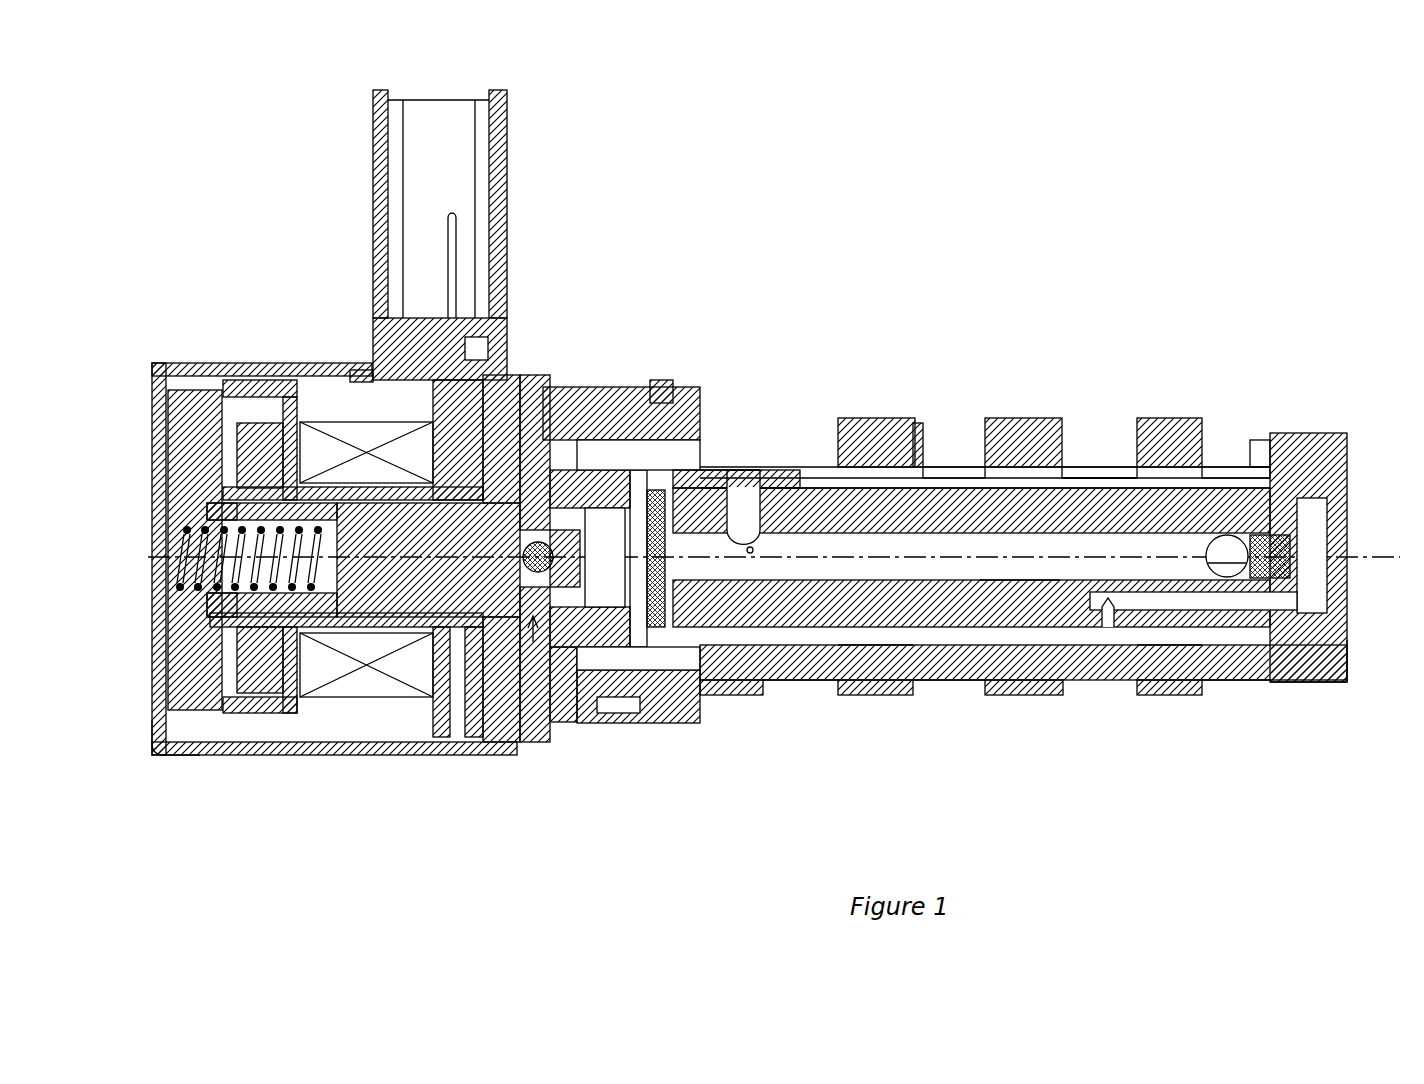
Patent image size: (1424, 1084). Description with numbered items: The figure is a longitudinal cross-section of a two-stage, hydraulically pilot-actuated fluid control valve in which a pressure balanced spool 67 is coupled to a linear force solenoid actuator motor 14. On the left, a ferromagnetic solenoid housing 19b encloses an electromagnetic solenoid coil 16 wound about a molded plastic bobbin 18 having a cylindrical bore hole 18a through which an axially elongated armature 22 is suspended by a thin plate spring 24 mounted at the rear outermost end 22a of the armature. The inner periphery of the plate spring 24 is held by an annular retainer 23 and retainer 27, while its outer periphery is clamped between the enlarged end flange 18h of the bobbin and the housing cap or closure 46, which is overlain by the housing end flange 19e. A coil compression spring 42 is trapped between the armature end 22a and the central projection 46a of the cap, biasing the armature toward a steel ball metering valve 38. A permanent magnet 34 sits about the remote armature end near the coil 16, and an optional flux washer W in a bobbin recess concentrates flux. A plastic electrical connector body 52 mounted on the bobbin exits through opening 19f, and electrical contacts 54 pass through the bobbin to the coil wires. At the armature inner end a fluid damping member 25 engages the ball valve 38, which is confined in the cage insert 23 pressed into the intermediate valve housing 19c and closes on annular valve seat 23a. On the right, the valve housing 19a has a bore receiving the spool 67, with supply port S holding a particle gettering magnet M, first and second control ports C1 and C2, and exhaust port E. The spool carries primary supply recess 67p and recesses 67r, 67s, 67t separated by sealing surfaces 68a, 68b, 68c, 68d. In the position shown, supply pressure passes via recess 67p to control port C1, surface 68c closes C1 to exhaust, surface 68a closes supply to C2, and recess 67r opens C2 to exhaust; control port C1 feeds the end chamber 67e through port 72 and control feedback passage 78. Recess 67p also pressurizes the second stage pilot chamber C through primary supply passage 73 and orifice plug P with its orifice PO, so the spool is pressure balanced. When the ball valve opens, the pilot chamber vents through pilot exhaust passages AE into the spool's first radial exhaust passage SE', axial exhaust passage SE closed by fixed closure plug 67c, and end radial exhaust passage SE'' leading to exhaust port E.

The electrical connector body 52 is at (498, 147).
The electrical contacts 54 is at (456, 243).
The opening 19f is at (368, 376).
The linear force solenoid actuator motor 14 is at (213, 348).
The annular end flange 19e is at (150, 392).
The solenoid housing 19b is at (187, 752).
The plate spring 24 is at (172, 738).
The annular end flange of the coil bobbin 18h is at (232, 392).
The housing cap or closure 46 is at (187, 388).
The central axially extending projection 46a is at (207, 527).
The annular retainer / ball valve cage insert 23 is at (215, 485).
The electromagnetic solenoid coil 16 is at (338, 692).
The permanent magnet 34 is at (258, 700).
The rear outermost end of the armature 22a is at (223, 630).
The flux washer W is at (458, 702).
The bobbin 18 is at (493, 750).
The armature 22 is at (373, 540).
The bore hole 18a is at (397, 614).
The coil compression spring 42 is at (245, 572).
The retainer / damping and exhaust chamber 27 is at (222, 600).
The fluid damping member 25 is at (540, 540).
The second stage pilot chamber C is at (605, 557).
The ball metering valve (pilot valve) 38 is at (556, 392).
The annular valve seat 23a is at (660, 445).
The intermediate valve housing 19c is at (603, 724).
The pilot exhaust passages AE is at (600, 470).
The spool 67 is at (818, 628).
The spool sealing surface 68a is at (832, 425).
The spool sealing surface 68b is at (1075, 435).
The spool sealing surface 68c is at (1112, 440).
The spool sealing surface 68d is at (1258, 450).
The particle gettering magnet M is at (922, 420).
The supply port S is at (945, 440).
The first control port C1 is at (1100, 435).
The exhaust port E is at (1218, 445).
The annular spool recess 67t is at (1130, 440).
The orifice plug P is at (735, 475).
The first radial exhaust passage SE' is at (757, 390).
The second control port C2 is at (745, 520).
The orifice PO is at (752, 548).
The end radial exhaust passage SE'' is at (1263, 471).
The fixed closure plug 67c is at (1300, 540).
The end chamber 67e is at (1305, 595).
The port 72 is at (1108, 630).
The axial longitudinal exhaust passage SE is at (1020, 662).
The primary supply passage 73 is at (872, 645).
The annular spool recess 67r is at (795, 698).
The spool primary supply recess 67p is at (953, 655).
The control feedback passage 78 is at (1180, 640).
The annular spool recess 67s is at (1255, 692).
The valve housing 19a is at (1288, 688).